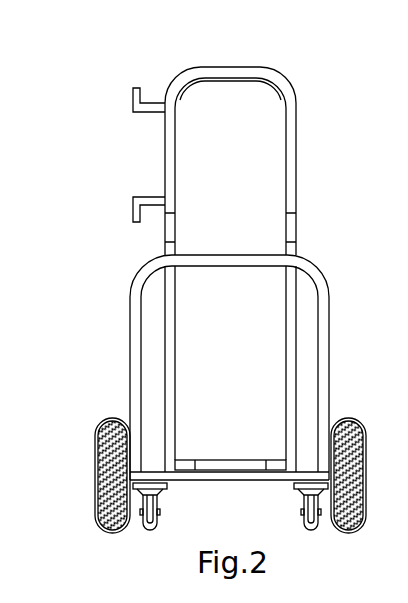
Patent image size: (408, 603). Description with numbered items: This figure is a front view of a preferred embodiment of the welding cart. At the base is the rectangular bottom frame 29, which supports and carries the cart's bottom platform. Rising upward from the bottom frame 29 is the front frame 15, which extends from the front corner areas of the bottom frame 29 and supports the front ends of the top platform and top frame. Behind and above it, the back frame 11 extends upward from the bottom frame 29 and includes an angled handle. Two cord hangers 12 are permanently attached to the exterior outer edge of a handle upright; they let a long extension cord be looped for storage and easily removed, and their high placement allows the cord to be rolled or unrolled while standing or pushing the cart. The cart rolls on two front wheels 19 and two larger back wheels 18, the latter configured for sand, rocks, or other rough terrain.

The back frame 11 is at (216, 62).
The cord hangers 12 is at (132, 111).
The front frame 15 is at (222, 269).
The back wheels 18 is at (100, 535).
The front wheels 19 is at (146, 535).
The bottom frame 29 is at (217, 484).